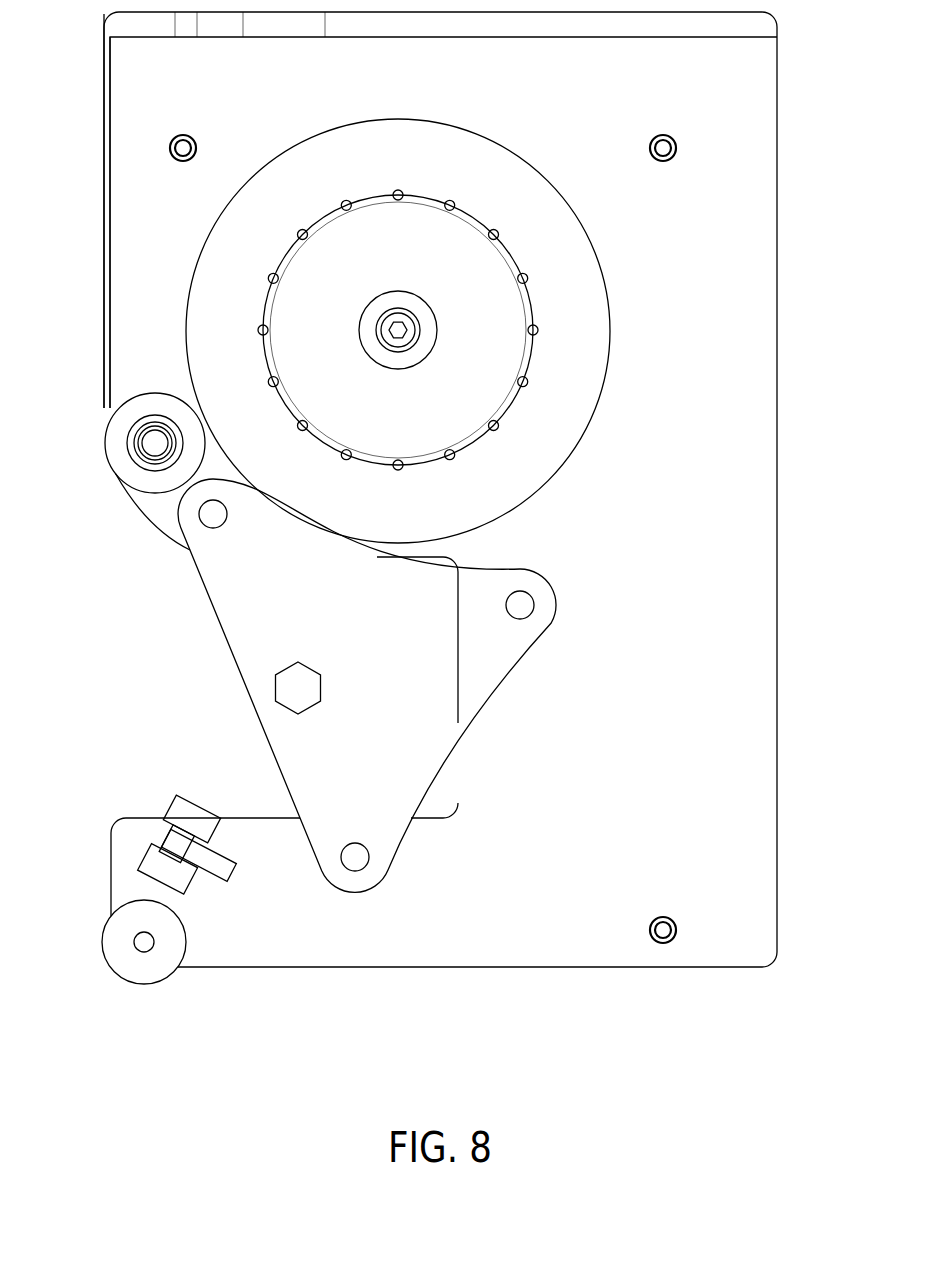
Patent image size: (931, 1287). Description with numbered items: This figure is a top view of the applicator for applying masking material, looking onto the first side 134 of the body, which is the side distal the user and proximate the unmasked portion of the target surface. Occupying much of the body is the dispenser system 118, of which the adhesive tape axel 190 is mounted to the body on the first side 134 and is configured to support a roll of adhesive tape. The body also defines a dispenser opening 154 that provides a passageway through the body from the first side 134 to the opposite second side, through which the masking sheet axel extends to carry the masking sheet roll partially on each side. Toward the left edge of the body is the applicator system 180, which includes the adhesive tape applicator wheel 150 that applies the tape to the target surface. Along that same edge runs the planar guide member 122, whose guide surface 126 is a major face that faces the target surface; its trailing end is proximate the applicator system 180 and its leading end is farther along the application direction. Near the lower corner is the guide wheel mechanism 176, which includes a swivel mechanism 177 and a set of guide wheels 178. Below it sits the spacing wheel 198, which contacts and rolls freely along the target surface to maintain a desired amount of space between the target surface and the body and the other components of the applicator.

The dispenser system 118 is at (568, 166).
The guide member 122 is at (104, 110).
The guide surface 126 is at (104, 205).
The first side 134 is at (757, 256).
The adhesive tape applicator wheel 150 is at (113, 449).
The dispenser opening 154 is at (459, 757).
The guide wheel mechanism 176 is at (165, 841).
The swivel mechanism 177 is at (220, 867).
The set of guide wheels 178 is at (190, 817).
The applicator system 180 is at (116, 441).
The adhesive tape axel 190 is at (507, 264).
The spacing wheel 198 is at (133, 968).